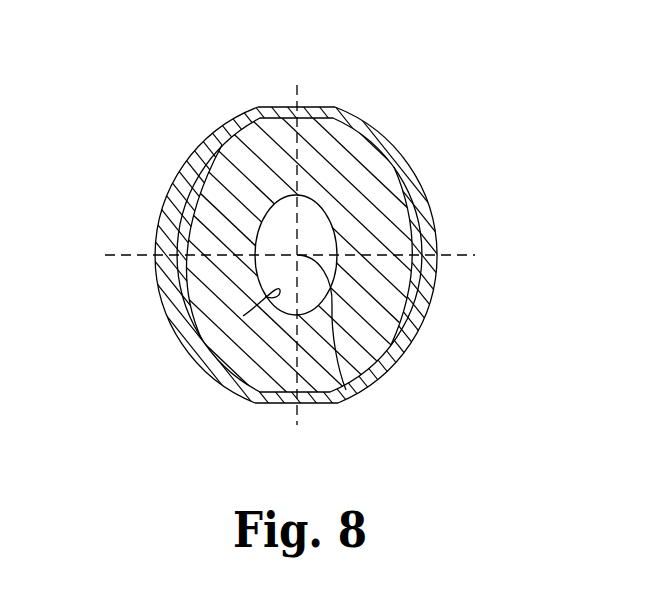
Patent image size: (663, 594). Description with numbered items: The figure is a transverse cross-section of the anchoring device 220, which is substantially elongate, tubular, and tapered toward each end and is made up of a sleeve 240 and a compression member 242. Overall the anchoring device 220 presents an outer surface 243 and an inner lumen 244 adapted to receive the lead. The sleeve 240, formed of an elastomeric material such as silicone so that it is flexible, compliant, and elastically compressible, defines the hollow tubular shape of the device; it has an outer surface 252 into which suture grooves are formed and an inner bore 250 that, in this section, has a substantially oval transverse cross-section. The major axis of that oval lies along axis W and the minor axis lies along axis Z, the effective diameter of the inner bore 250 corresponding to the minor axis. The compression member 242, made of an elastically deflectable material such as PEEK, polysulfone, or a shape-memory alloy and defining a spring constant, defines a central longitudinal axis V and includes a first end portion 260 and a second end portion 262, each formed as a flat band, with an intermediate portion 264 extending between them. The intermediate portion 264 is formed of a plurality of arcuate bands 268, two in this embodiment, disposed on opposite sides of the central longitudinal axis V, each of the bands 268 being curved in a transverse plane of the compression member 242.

The anchoring device 220 is at (189, 96).
The sleeve 240 is at (430, 310).
The compression member 242 is at (362, 122).
The outer surface 243 is at (418, 190).
The inner lumen 244 is at (333, 218).
The inner bore 250 is at (243, 316).
The outer surface 252 is at (172, 307).
The first end portion 260 is at (262, 106).
The second end portion 262 is at (263, 405).
The intermediate portion 264 is at (166, 226).
The arcuate bands 268 is at (192, 191).
The axis W is at (297, 94).
The central longitudinal axis V is at (343, 386).
The axis Z is at (160, 268).